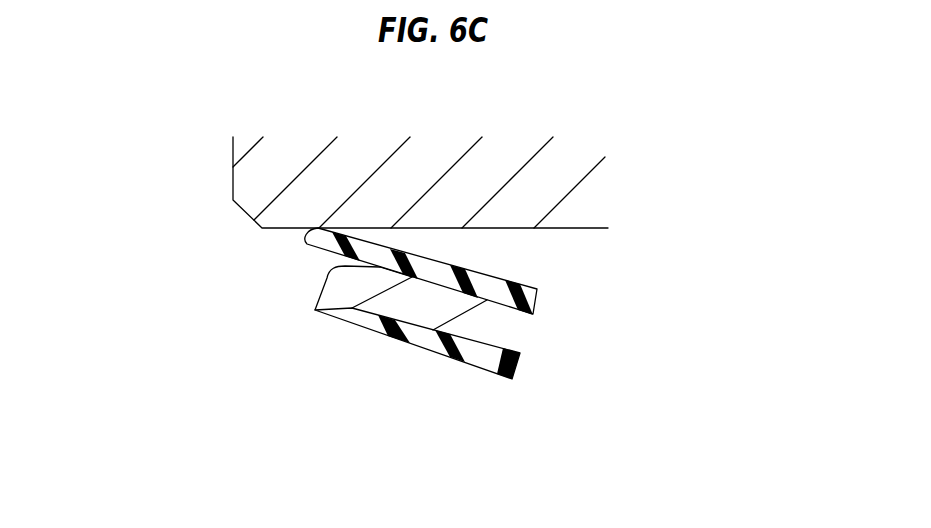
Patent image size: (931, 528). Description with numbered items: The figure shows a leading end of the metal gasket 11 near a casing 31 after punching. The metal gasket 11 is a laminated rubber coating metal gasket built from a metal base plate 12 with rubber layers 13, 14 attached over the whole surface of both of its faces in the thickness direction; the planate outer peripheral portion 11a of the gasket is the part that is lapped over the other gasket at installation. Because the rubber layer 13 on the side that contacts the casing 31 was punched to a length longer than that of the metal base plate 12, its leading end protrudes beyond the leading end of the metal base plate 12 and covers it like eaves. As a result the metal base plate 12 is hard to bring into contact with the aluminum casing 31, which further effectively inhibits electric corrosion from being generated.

The casing 31 is at (250, 175).
The metal gasket 11 is at (494, 251).
The outer peripheral portion 11a is at (393, 297).
The rubber layer 13 is at (536, 296).
The metal base plate 12 is at (498, 325).
The rubber layer 14 is at (517, 367).